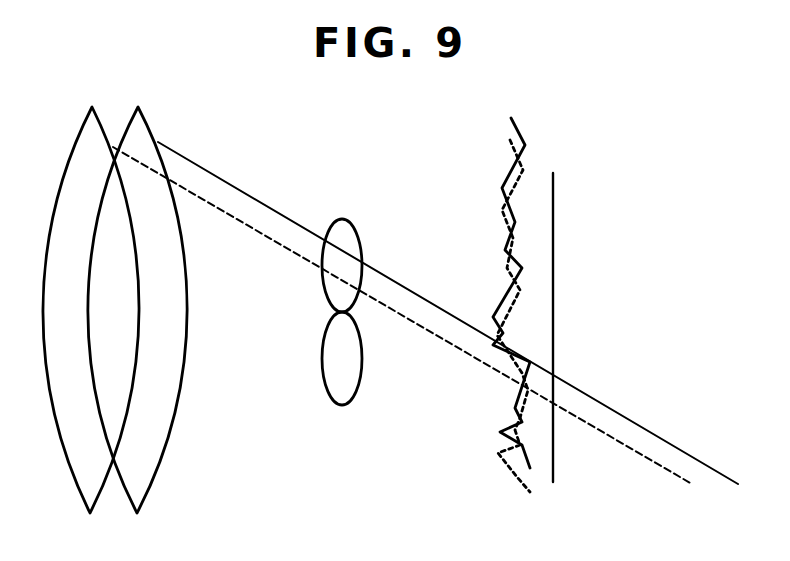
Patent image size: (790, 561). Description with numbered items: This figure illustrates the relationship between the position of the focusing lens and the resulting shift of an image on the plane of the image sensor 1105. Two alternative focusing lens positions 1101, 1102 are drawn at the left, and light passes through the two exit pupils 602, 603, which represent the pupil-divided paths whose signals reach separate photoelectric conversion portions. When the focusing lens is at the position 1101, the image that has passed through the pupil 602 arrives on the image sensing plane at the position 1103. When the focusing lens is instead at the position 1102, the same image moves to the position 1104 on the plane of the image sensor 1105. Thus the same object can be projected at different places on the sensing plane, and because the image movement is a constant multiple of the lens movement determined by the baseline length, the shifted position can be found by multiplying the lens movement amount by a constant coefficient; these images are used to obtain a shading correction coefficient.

The focusing lens position 1101 is at (170, 107).
The focusing lens position 1102 is at (108, 89).
The exit pupil 602 is at (344, 218).
The exit pupil 603 is at (340, 407).
The image position 1103 is at (498, 432).
The image position 1104 is at (515, 472).
The plane of the image sensor 1105 is at (553, 482).